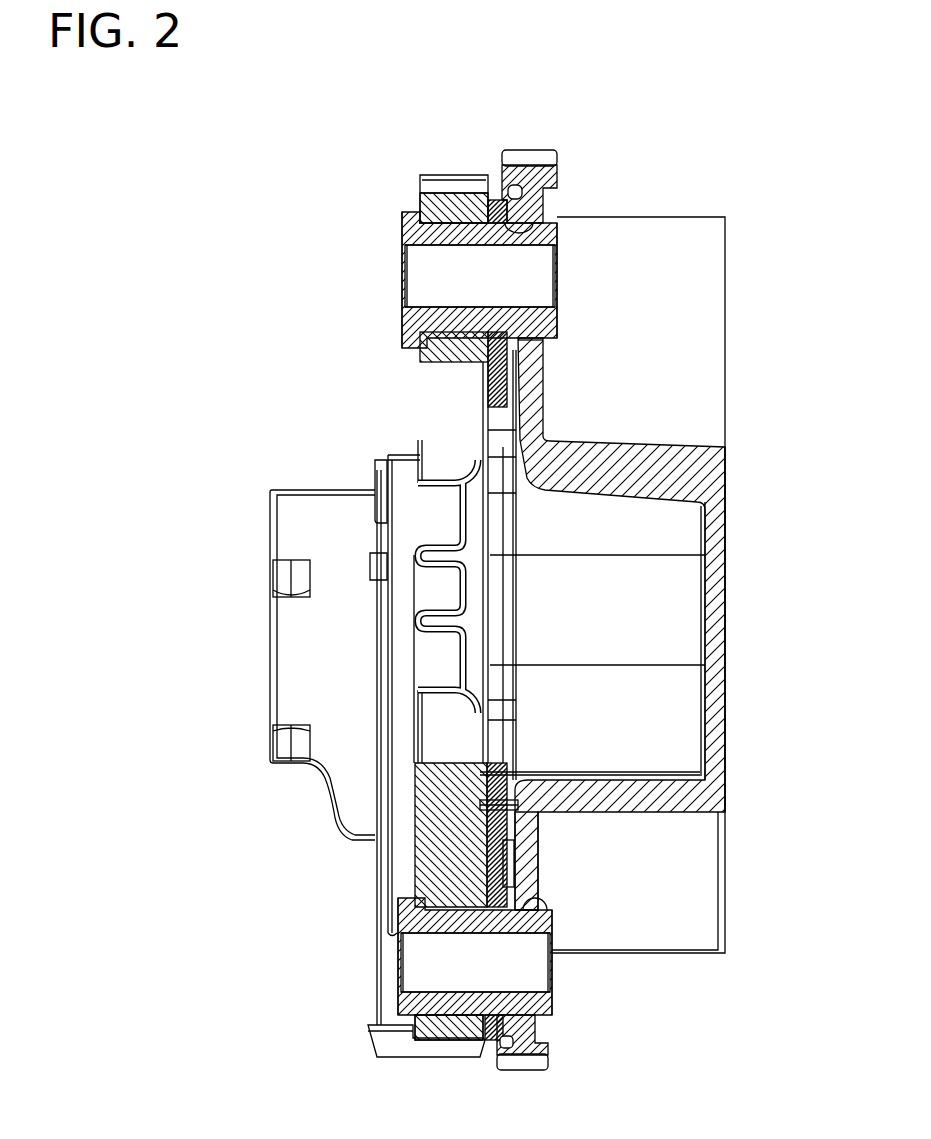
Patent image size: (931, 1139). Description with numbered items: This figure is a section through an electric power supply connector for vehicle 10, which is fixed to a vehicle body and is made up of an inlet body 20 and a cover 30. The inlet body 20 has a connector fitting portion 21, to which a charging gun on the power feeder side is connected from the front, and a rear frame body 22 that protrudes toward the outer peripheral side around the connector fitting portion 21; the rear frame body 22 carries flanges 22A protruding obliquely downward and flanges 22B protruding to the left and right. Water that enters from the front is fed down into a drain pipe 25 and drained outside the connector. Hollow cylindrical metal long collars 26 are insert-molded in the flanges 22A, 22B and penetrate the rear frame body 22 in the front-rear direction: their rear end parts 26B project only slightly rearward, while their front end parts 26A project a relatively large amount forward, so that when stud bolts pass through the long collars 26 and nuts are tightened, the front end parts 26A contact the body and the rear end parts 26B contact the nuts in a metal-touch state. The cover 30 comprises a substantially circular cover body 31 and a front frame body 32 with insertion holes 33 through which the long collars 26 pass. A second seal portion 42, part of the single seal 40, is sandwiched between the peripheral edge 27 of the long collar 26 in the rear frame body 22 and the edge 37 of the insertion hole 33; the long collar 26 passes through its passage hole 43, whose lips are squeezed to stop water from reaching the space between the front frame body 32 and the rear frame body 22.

The electric power supply connector for vehicle 10 is at (594, 158).
The inlet body 20 is at (450, 158).
The connector fitting portion 21 is at (680, 612).
The rear frame body 22 is at (437, 851).
The flange 22A is at (437, 1033).
The flange 22B is at (440, 200).
The drain pipe 25 is at (392, 1050).
The long collar 26 is at (398, 265).
The front end part 26A is at (555, 328).
The rear end part 26B is at (402, 330).
The peripheral edge 27 is at (475, 210).
The cover 30 is at (654, 198).
The cover body 31 is at (715, 660).
The front frame body 32 is at (525, 865).
The insertion hole 33 is at (530, 322).
The edge 37 is at (512, 205).
The seal 40 is at (505, 832).
The second seal portion 42 is at (495, 200).
The passage hole 43 is at (520, 214).